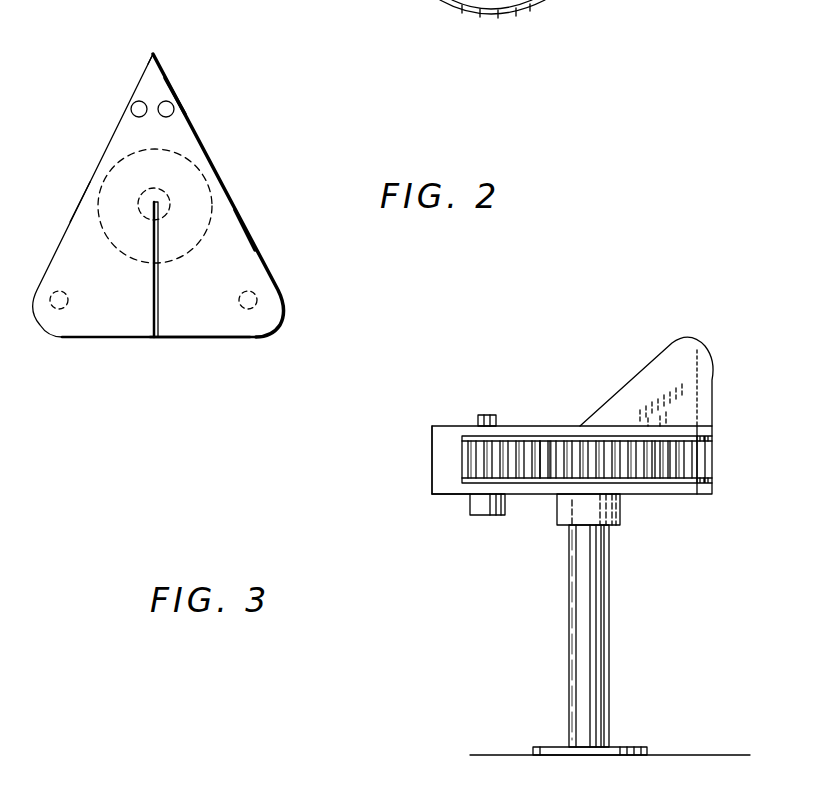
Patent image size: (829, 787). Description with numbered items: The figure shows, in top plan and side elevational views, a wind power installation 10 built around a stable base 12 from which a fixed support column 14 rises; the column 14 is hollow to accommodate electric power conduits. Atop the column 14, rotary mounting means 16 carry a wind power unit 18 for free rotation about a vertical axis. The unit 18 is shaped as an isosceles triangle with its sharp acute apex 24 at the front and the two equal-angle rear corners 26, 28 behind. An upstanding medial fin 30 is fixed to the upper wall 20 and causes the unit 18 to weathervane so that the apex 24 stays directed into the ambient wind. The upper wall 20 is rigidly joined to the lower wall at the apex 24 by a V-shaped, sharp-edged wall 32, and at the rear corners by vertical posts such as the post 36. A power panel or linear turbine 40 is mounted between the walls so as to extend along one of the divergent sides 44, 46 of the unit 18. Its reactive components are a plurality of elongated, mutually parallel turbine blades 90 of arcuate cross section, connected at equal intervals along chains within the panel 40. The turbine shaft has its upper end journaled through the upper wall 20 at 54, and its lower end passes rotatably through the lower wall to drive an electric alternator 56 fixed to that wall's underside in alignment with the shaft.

In FIG. 2, the wind power installation 10 is at (90, 150).
In FIG. 2, the stable base 12 is at (186, 158).
In FIG. 3, the stable base 12 is at (620, 748).
In FIG. 2, the fixed support column 14 is at (170, 200).
In FIG. 3, the fixed support column 14 is at (598, 601).
In FIG. 3, the rotary mounting means 16 is at (553, 528).
In FIG. 2, the wind power unit 18 is at (210, 340).
In FIG. 3, the wind power unit 18 is at (424, 463).
In FIG. 2, the upper wall 20 is at (235, 240).
In FIG. 2, the apex 24 is at (153, 54).
In FIG. 3, the apex 24 is at (432, 430).
In FIG. 2, the rear corner 26 is at (38, 328).
In FIG. 2, the rear corner 28 is at (262, 338).
In FIG. 2, the upstanding medial fin 30 is at (154, 313).
In FIG. 3, the upstanding medial fin 30 is at (702, 378).
In FIG. 3, the V-shaped wall 32 is at (442, 470).
In FIG. 3, the vertical post 36 is at (702, 460).
In FIG. 3, the power panel 40 is at (555, 465).
In FIG. 2, the divergent side 44 is at (80, 200).
In FIG. 2, the divergent side 46 is at (178, 104).
In FIG. 2, the shaft journal 54 is at (136, 102).
In FIG. 3, the shaft journal 54 is at (488, 414).
In FIG. 3, the electric alternator 56 is at (483, 505).
In FIG. 3, the turbine blades 90 is at (550, 445).